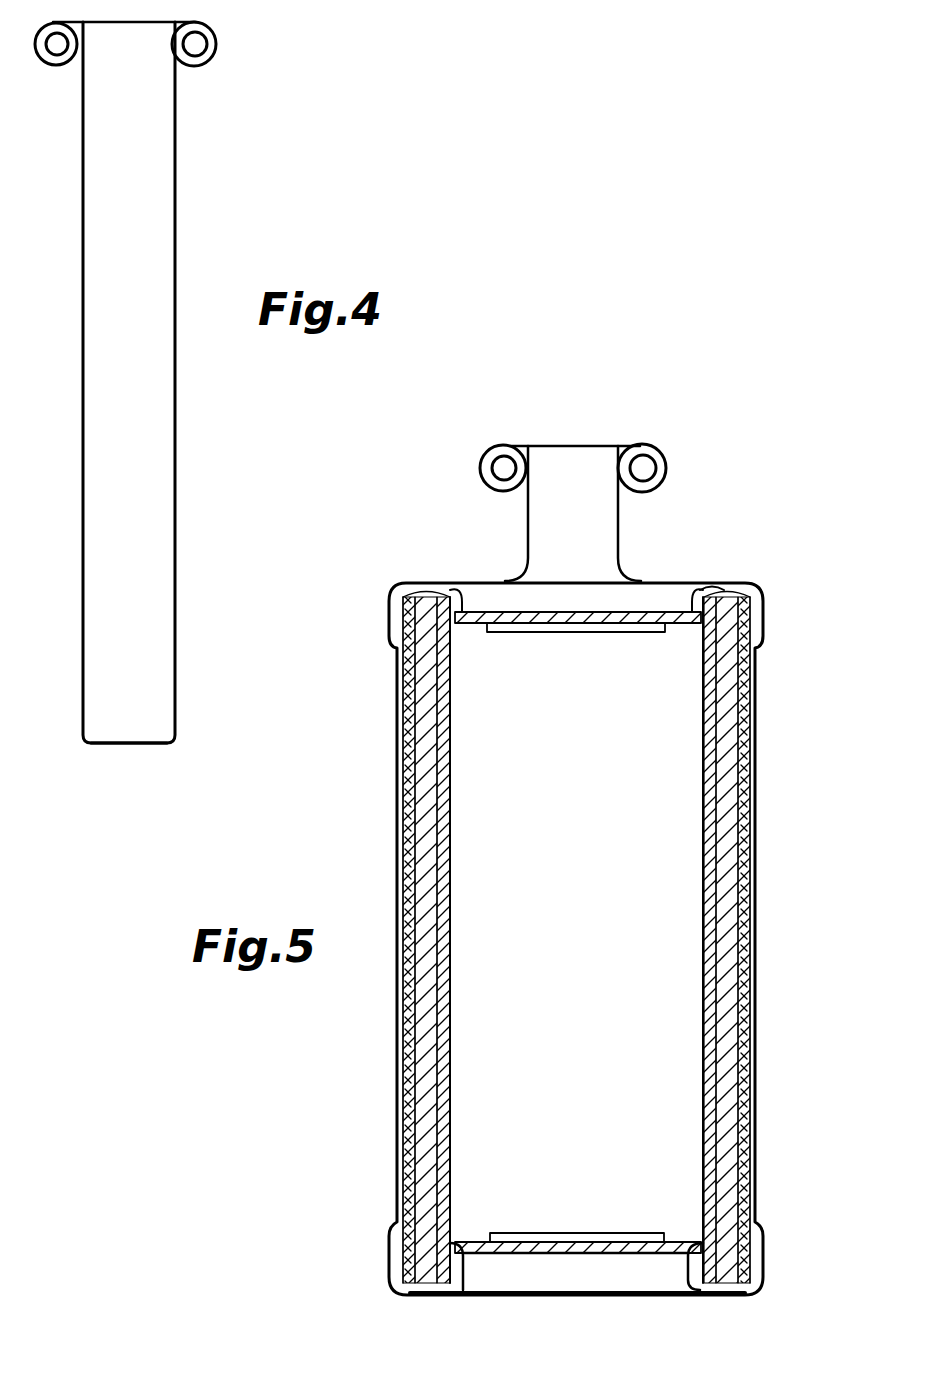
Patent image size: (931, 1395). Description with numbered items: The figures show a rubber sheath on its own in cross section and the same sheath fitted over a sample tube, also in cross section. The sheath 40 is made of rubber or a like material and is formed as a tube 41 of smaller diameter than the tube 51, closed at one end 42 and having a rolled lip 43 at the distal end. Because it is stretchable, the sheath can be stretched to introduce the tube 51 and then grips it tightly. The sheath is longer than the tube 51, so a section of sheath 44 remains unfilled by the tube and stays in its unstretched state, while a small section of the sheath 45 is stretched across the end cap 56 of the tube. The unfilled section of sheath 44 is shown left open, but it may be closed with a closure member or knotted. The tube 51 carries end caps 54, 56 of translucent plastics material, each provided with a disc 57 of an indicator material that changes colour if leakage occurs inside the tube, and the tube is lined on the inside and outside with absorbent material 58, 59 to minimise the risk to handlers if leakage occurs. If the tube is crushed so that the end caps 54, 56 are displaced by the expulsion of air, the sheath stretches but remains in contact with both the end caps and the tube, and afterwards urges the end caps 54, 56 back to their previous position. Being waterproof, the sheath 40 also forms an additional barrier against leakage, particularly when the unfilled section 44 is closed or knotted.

In FIG. 4, the sheath 40 is at (200, 435).
In FIG. 5, the sheath 40 is at (656, 512).
In FIG. 4, the tube 41 is at (176, 470).
In FIG. 4, the closed end 42 is at (125, 746).
In FIG. 4, the rolled lip 43 is at (217, 47).
In FIG. 5, the section of sheath 44 is at (620, 513).
In FIG. 5, the small section of the sheath 45 is at (473, 581).
In FIG. 5, the tube 51 is at (727, 1065).
In FIG. 5, the end cap 54 is at (676, 1253).
In FIG. 5, the end cap 56 is at (757, 617).
In FIG. 5, the disc 57 is at (592, 635).
In FIG. 5, the absorbent material 58 is at (742, 793).
In FIG. 5, the absorbent material 59 is at (706, 827).